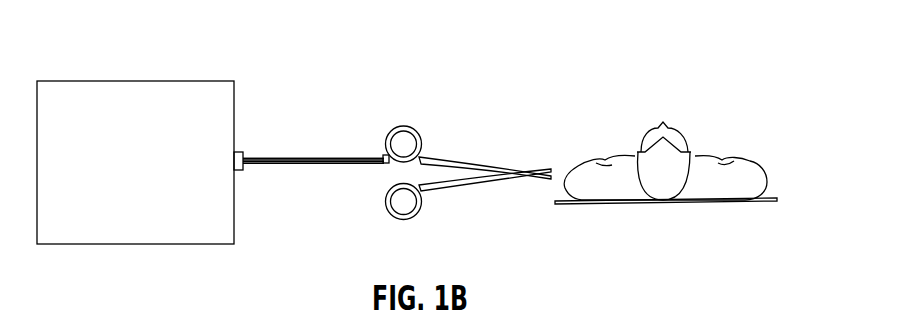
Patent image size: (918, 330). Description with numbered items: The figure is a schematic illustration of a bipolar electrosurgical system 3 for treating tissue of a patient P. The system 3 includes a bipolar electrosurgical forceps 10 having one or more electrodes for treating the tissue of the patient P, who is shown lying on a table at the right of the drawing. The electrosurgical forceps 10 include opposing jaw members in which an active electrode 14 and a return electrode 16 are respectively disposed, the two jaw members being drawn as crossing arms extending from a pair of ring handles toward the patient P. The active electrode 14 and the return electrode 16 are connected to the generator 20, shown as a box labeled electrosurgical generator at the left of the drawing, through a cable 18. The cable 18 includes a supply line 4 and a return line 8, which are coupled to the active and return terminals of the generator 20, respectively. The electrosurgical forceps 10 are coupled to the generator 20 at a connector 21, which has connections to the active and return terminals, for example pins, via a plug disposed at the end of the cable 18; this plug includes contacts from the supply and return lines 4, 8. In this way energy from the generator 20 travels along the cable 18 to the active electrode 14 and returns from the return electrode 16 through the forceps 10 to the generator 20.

The bipolar electrosurgical system 3 is at (264, 52).
The generator 20 is at (140, 81).
The connector 21 is at (240, 152).
The return line 8 is at (278, 158).
The supply line 4 is at (331, 165).
The cable 18 is at (330, 158).
The bipolar electrosurgical forceps 10 is at (483, 173).
The active electrode 14 is at (538, 170).
The return electrode 16 is at (530, 180).
The patient P is at (734, 149).